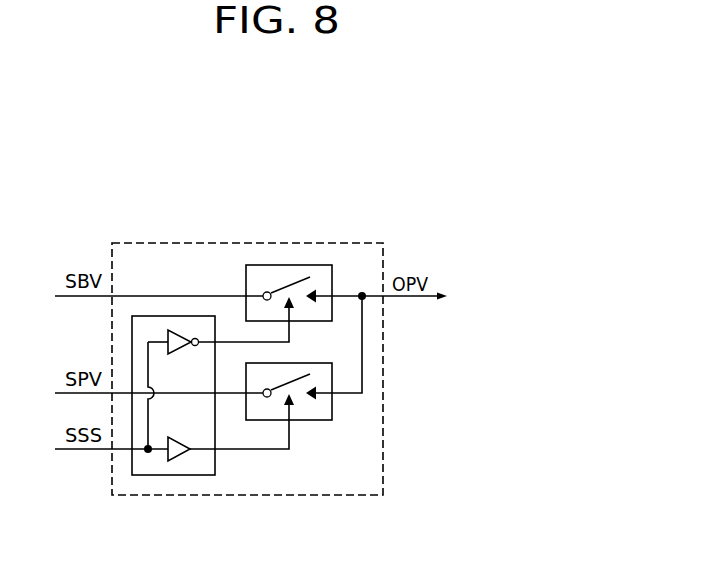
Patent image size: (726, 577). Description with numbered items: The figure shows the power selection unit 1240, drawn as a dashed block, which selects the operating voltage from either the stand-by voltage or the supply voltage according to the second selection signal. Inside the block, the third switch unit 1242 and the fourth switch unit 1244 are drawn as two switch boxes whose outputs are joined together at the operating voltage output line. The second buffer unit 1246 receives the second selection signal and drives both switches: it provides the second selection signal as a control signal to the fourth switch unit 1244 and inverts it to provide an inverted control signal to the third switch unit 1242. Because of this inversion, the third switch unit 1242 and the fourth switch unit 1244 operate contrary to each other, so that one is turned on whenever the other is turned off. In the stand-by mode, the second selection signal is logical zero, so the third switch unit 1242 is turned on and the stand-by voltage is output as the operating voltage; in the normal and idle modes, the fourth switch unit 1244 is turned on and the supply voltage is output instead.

The power selection unit 1240 is at (262, 146).
The third switch unit 1242 is at (289, 265).
The fourth switch unit 1244 is at (333, 405).
The second buffer unit 1246 is at (170, 475).